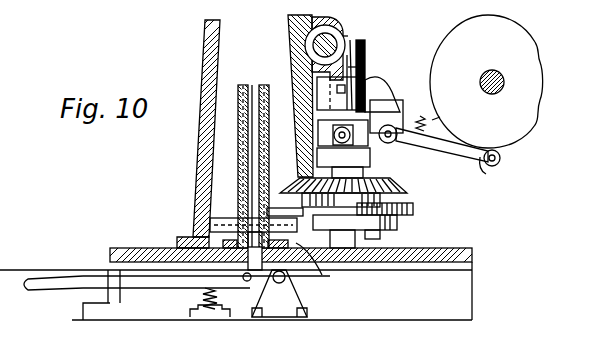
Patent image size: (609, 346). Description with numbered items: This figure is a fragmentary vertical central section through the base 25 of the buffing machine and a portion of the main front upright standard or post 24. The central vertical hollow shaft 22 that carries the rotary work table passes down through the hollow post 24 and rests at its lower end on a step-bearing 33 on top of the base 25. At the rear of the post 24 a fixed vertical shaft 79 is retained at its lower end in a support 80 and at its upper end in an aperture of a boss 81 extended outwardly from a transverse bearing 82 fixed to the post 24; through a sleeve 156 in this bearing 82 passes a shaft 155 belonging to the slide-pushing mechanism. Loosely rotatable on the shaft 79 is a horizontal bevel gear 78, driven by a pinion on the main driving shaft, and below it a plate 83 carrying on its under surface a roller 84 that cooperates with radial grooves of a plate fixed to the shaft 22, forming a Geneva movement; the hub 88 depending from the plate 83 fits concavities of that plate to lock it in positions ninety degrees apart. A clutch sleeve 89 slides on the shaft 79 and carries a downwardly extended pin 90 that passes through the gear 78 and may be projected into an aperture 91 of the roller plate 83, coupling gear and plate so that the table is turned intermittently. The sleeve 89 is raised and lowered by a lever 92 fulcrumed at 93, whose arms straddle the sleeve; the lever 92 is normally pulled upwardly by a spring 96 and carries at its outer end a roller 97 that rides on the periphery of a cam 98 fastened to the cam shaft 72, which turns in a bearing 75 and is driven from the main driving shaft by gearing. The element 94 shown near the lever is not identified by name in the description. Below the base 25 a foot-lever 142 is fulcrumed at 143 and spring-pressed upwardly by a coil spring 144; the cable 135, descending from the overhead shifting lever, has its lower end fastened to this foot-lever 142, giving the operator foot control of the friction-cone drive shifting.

The hollow upright standard or post 24 is at (198, 140).
The cable 135 is at (254, 85).
The central vertical hollow shaft 22 is at (262, 158).
The clutch sleeve 89 is at (318, 158).
The transverse bearing 82 is at (325, 28).
The sleeve 156 is at (348, 36).
The shaft 155 is at (385, 70).
The boss 81 is at (376, 56).
The bearing 75 is at (330, 91).
The bracket 94 is at (376, 100).
The fulcrum 93 is at (397, 115).
The pin 90 is at (403, 150).
The roller 97 is at (503, 158).
The lever 92 is at (497, 172).
The cam 98 is at (530, 106).
The cam shaft 72 is at (505, 82).
The spring 96 is at (434, 119).
The fixed vertical shaft 79 is at (370, 163).
The horizontal bevel gear 78 is at (392, 183).
The aperture 91 is at (342, 211).
The plate 83 is at (414, 207).
The hub 88 is at (398, 222).
The support 80 is at (382, 240).
The roller 84 is at (253, 217).
The base 25 is at (420, 262).
The foot-lever 142 is at (68, 290).
The coil spring 144 is at (202, 300).
The fulcrum 143 is at (288, 283).
The step-bearing 33 is at (321, 265).